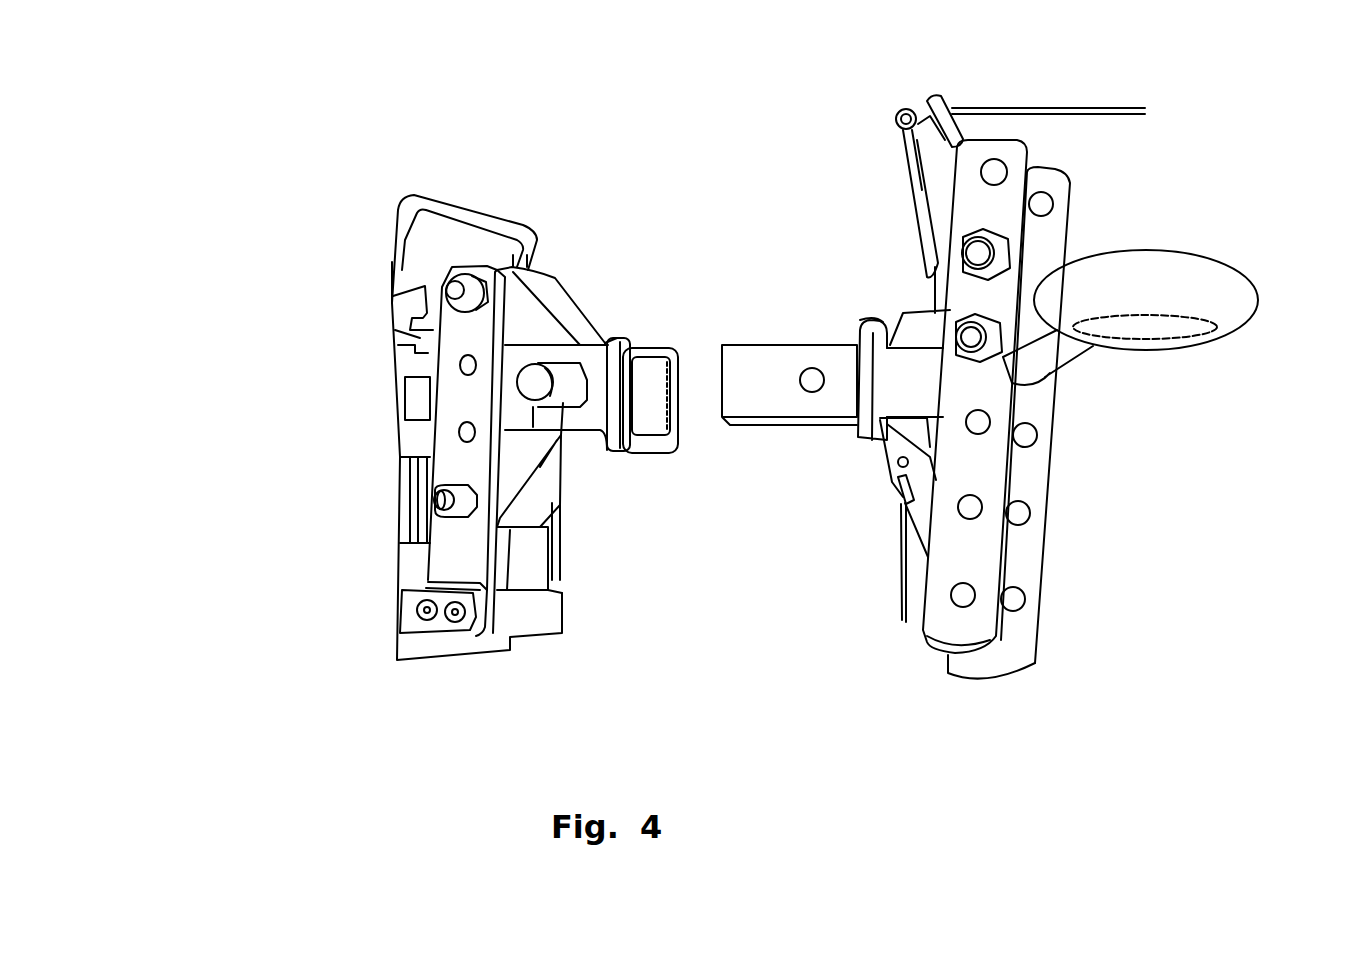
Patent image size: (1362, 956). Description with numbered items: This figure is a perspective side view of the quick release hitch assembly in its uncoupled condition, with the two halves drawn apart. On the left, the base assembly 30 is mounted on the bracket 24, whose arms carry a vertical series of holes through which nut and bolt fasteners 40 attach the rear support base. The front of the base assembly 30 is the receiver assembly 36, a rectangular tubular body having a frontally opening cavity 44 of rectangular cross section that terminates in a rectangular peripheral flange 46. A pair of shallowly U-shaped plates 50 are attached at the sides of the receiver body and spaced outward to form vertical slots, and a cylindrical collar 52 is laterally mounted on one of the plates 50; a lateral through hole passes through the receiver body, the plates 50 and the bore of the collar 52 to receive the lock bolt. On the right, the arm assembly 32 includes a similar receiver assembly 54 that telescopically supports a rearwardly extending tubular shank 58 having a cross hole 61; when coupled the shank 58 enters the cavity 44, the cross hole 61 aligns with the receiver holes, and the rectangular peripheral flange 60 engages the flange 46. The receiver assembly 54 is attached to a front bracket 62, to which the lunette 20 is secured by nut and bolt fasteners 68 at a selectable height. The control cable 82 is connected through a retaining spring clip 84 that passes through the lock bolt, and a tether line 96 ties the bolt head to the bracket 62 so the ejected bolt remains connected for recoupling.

The lunette 20 is at (1228, 330).
The bracket 24 is at (445, 370).
The base assembly 30 is at (556, 272).
The arm assembly 32 is at (1050, 546).
The receiver assembly 36 is at (517, 355).
The nut and bolt fasteners 40 is at (438, 492).
The frontally opening cavity 44 is at (648, 395).
The rectangular peripheral flange 46 is at (645, 338).
The U-shaped plates 50 is at (561, 435).
The cylindrical collar 52 is at (563, 403).
The receiver assembly 54 is at (908, 368).
The tubular shank 58 is at (789, 397).
The rectangular peripheral flange 60 is at (863, 430).
The cross hole 61 is at (813, 385).
The front bracket 62 is at (1023, 653).
The nut and bolt fasteners 68 is at (985, 337).
The control cable 82 is at (1147, 110).
The retaining spring clip 84 is at (903, 145).
The tether line 96 is at (898, 607).